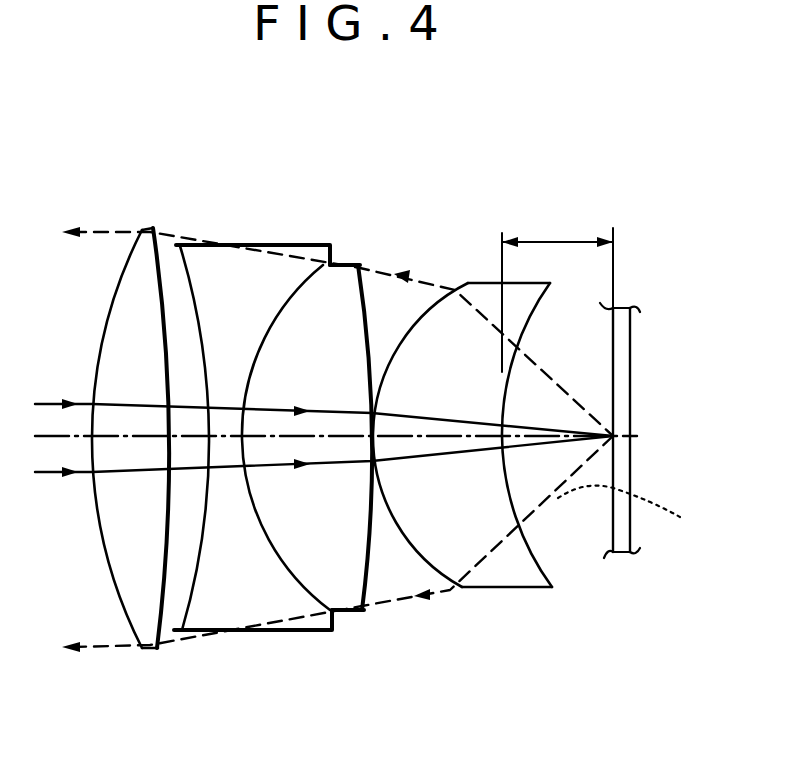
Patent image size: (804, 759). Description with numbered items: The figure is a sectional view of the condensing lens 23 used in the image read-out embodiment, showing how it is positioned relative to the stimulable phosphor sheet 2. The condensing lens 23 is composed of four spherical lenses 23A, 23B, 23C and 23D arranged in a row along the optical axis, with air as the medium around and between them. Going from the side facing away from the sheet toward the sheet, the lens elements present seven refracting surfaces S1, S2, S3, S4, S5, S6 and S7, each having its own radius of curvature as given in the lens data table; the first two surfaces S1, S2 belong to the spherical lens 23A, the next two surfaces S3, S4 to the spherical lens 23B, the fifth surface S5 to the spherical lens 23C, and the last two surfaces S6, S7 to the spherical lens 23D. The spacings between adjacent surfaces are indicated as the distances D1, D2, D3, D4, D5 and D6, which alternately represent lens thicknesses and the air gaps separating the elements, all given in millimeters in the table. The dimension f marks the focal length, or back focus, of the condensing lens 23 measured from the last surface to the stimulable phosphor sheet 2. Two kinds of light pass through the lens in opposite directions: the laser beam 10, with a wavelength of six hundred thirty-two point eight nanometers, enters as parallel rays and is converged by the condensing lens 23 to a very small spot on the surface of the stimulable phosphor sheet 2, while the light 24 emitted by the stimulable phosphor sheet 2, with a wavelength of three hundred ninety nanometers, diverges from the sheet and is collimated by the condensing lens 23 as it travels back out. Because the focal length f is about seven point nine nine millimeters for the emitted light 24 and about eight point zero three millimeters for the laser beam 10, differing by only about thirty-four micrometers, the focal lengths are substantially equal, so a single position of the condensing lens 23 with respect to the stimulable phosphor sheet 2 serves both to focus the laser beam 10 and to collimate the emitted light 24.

The stimulable phosphor sheet 2 is at (630, 375).
The laser beam 10 is at (127, 478).
The condensing lens 23 is at (348, 188).
The spherical lens 23A is at (144, 441).
The spherical lens 23B is at (251, 441).
The spherical lens 23C is at (368, 441).
The spherical lens 23D is at (477, 441).
The light emitted by the stimulable phosphor sheet 24 is at (633, 499).
The focal length f is at (557, 288).
The distance between adjacent surfaces D1 is at (128, 446).
The distance between adjacent surfaces D2 is at (181, 446).
The distance between adjacent surfaces D3 is at (222, 446).
The distance between adjacent surfaces D4 is at (332, 448).
The distance between adjacent surfaces D5 is at (374, 382).
The distance between adjacent surfaces D6 is at (465, 448).
The lens surface S1 is at (120, 598).
The lens surface S2 is at (165, 612).
The lens surface S3 is at (184, 597).
The lens surface S4 is at (290, 580).
The lens surface S5 is at (373, 583).
The lens surface S6 is at (435, 572).
The lens surface S7 is at (552, 570).